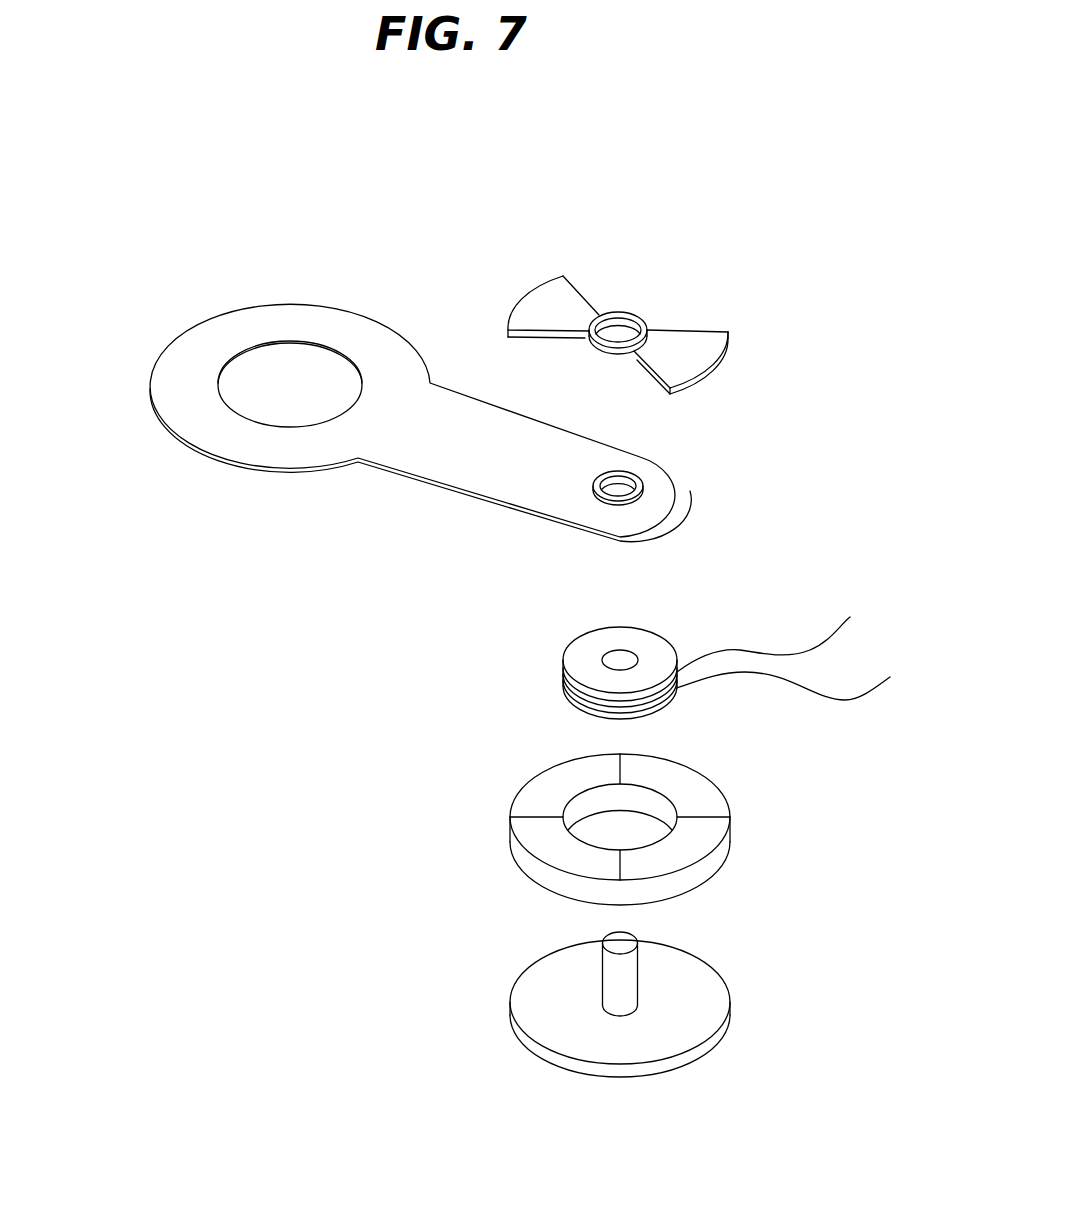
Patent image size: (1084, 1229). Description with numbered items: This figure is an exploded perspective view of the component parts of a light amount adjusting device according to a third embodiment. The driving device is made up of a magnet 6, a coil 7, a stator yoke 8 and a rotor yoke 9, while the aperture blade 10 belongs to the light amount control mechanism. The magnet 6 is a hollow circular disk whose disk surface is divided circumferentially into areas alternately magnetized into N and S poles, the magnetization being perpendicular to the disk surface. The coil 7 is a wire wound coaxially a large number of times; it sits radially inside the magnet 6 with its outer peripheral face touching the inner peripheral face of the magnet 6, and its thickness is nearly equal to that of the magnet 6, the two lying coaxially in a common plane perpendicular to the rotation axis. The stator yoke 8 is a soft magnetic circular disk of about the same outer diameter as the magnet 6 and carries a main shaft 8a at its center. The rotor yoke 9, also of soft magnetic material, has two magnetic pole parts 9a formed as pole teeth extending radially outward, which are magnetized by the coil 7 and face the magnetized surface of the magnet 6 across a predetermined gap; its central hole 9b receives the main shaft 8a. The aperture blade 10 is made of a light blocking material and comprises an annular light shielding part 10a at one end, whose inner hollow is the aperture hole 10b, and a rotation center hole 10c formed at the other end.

The aperture blade 10 is at (435, 351).
The light shielding part 10a is at (255, 333).
The aperture hole 10b is at (255, 392).
The rotation center hole 10c is at (640, 474).
The rotor yoke 9 is at (638, 277).
The magnetic pole parts 9a is at (692, 353).
The hole 9b is at (620, 335).
The coil 7 is at (563, 690).
The magnet 6 is at (502, 789).
The stator yoke 8 is at (609, 995).
The main shaft 8a is at (632, 977).